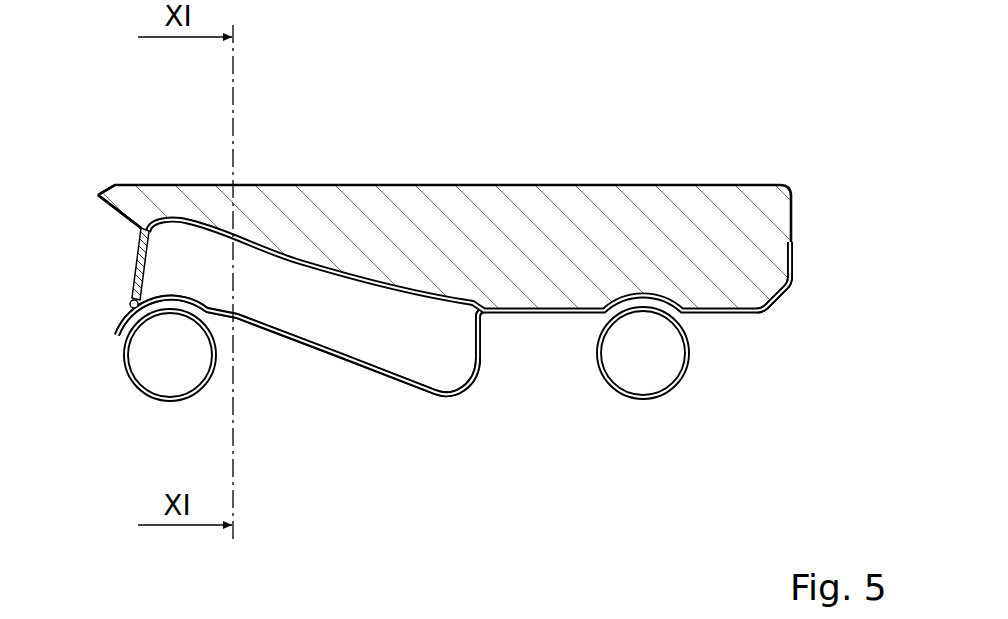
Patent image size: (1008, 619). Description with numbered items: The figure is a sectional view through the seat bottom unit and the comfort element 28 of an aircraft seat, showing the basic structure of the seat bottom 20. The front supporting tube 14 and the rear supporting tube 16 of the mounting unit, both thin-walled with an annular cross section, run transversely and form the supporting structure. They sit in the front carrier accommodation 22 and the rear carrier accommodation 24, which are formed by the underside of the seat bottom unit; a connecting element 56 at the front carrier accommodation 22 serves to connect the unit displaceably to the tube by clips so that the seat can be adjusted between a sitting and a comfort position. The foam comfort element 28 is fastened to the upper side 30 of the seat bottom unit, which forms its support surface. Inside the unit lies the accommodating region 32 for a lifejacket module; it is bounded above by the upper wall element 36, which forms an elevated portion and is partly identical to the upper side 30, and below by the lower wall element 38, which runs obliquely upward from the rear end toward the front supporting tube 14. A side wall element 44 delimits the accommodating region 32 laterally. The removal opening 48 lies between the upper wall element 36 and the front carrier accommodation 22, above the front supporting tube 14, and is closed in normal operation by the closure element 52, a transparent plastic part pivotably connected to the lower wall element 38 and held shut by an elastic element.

The front supporting tube 14 is at (177, 402).
The rear supporting tube 16 is at (645, 400).
The seat bottom 20 is at (656, 132).
The front carrier accommodation 22 is at (170, 318).
The rear carrier accommodation 24 is at (644, 315).
The comfort element 28 is at (487, 233).
The upper side 30 is at (707, 297).
The accommodating region 32 is at (397, 349).
The upper wall element 36 is at (377, 280).
The lower wall element 38 is at (310, 343).
The side wall element 44 is at (274, 279).
The removal opening 48 is at (158, 248).
The closure element 52 is at (137, 262).
The connecting element 56 is at (116, 196).